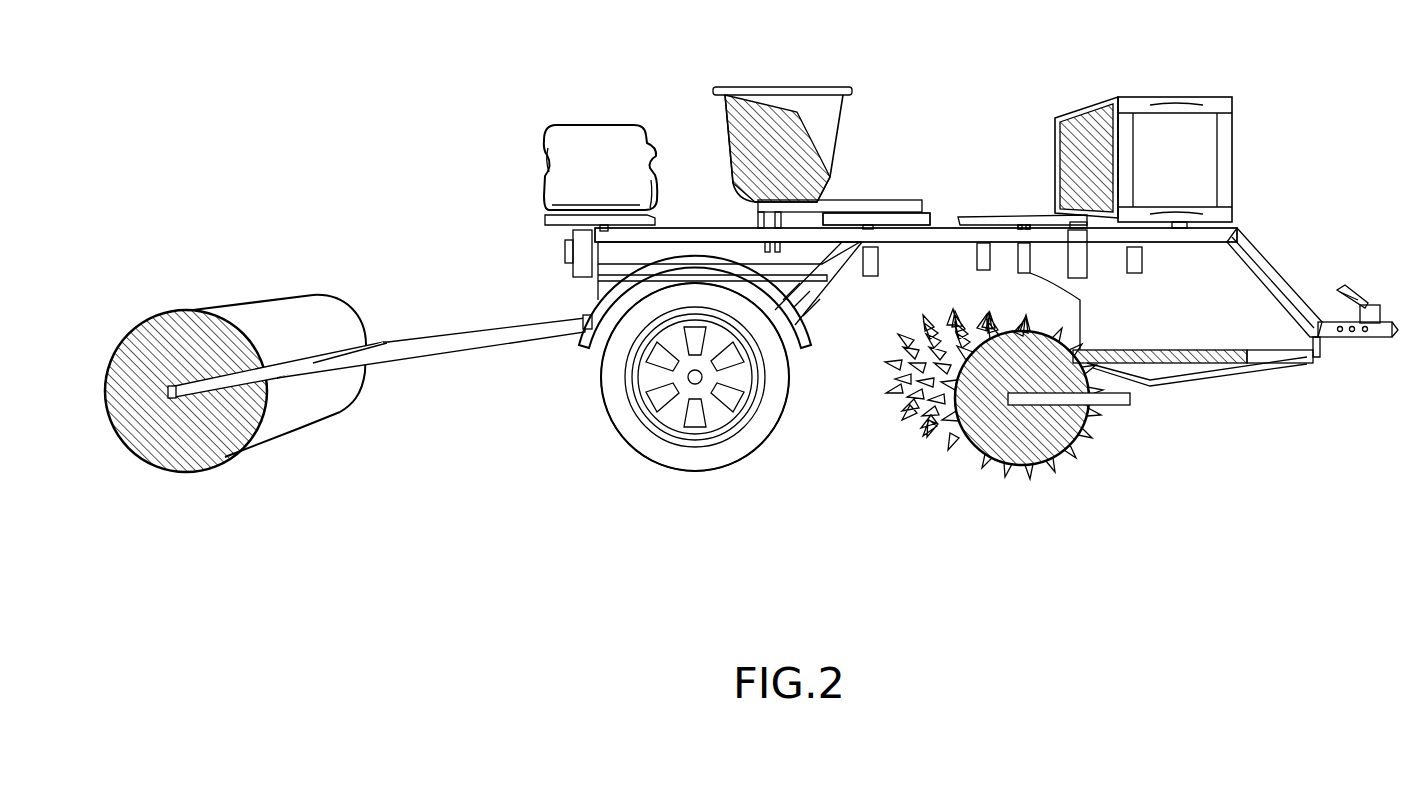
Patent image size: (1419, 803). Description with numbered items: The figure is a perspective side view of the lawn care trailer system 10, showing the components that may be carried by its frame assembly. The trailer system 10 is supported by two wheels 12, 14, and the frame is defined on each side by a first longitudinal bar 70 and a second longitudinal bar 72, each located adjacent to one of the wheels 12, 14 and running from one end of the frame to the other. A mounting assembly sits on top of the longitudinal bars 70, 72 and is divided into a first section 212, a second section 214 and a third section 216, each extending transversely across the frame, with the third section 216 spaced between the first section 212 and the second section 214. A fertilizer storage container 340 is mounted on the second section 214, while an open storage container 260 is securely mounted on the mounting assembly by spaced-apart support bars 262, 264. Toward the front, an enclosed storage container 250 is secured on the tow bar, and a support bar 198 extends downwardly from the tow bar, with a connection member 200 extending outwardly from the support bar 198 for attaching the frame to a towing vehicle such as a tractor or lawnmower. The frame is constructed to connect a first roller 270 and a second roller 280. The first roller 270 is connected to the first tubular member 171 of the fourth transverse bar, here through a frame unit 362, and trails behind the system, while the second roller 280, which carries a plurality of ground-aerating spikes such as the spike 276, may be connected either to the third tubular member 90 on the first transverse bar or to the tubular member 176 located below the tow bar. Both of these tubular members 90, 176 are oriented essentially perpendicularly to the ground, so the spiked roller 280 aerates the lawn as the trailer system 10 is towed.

The lawn care trailer system 10 is at (814, 460).
The wheel 12 is at (655, 452).
The wheel 14 is at (695, 377).
The first longitudinal bar 70 is at (935, 238).
The second longitudinal bar 72 is at (916, 235).
The third tubular member 90 is at (1030, 273).
The first tubular member 171 is at (578, 345).
The tubular member 176 is at (1142, 265).
The support bar 198 is at (1267, 270).
The connection member 200 is at (1373, 300).
The first section 212 is at (983, 212).
The second section 214 is at (540, 217).
The third section 216 is at (935, 212).
The enclosed storage container 250 is at (1235, 130).
The open storage container 260 is at (820, 132).
The support bar 262 is at (826, 200).
The support bar 264 is at (876, 219).
The first roller 270 is at (352, 300).
The ground-aerating spike 276 is at (898, 430).
The second roller 280 is at (1020, 470).
The fertilizer storage container 340 is at (615, 125).
The frame unit 362 is at (473, 353).